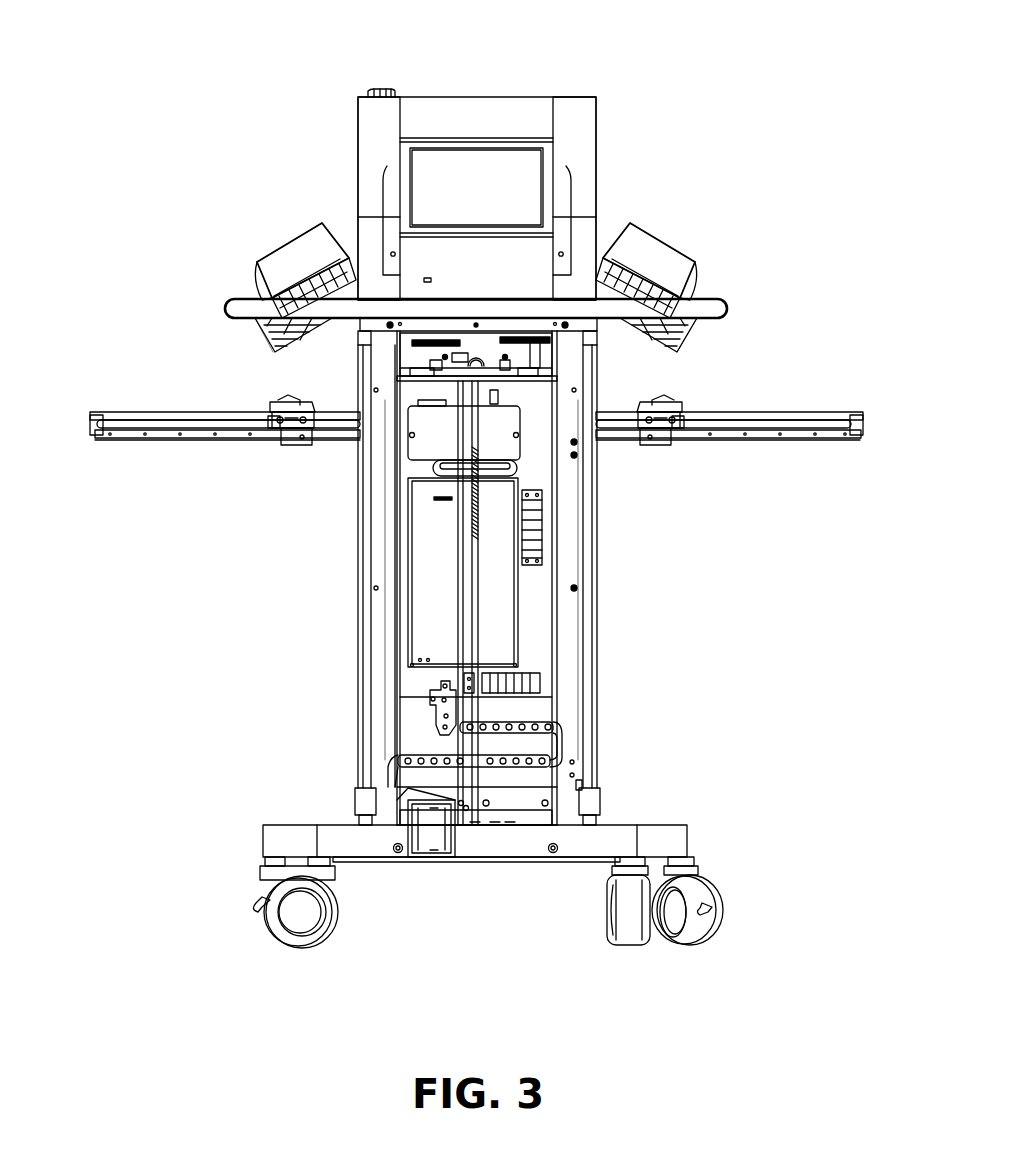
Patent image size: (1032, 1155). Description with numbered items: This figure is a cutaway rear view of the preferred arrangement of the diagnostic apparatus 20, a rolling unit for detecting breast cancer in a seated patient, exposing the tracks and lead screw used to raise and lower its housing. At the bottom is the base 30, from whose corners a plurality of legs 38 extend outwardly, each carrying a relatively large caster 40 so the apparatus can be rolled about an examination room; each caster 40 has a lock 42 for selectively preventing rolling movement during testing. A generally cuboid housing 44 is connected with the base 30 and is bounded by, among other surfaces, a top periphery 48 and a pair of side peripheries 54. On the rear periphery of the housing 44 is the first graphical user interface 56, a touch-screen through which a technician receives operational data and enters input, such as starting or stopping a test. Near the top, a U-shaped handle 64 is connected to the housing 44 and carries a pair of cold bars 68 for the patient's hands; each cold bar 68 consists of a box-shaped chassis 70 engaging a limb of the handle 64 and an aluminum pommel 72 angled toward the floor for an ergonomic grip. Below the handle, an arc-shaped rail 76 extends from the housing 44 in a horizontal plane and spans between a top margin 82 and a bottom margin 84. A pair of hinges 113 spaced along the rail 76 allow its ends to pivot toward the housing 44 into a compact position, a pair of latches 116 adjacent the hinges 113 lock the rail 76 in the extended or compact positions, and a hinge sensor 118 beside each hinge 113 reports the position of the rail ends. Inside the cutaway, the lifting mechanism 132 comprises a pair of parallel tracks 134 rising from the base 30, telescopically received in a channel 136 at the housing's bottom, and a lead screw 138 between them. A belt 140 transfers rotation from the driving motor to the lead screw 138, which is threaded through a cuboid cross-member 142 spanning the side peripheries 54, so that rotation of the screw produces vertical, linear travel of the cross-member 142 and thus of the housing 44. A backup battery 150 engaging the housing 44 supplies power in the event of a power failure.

The diagnostic apparatus 20 is at (708, 100).
The base 30 is at (479, 866).
The legs 38 is at (285, 836).
The caster 40 is at (265, 942).
The lock 42 is at (258, 905).
The housing 44 is at (483, 571).
The top periphery 48 is at (573, 97).
The side peripheries 54 is at (357, 640).
The first graphical user interface 56 is at (513, 158).
The handle 64 is at (733, 300).
The cold bars 68 is at (292, 230).
The chassis 70 is at (237, 305).
The pommel 72 is at (283, 258).
The arc-shaped rail 76 is at (797, 440).
The top margin 82 is at (195, 410).
The bottom margin 84 is at (205, 440).
The hinges 113 is at (300, 446).
The latches 116 is at (288, 405).
The hinge sensor 118 is at (283, 440).
The lifting mechanism 132 is at (368, 588).
The tracks 134 is at (380, 720).
The channel 136 is at (597, 805).
The lead screw 138 is at (478, 625).
The belt 140 is at (445, 850).
The cross-member 142 is at (510, 815).
The backup battery 150 is at (425, 447).